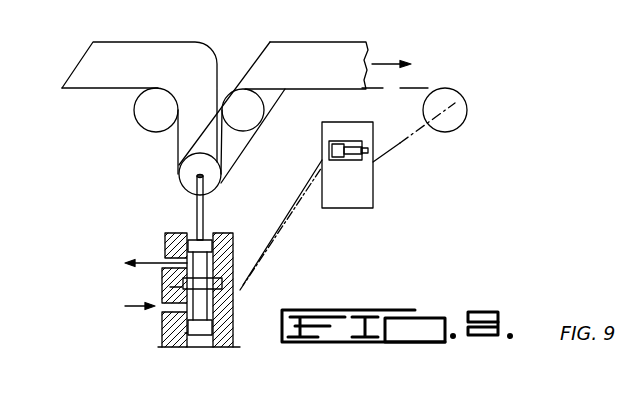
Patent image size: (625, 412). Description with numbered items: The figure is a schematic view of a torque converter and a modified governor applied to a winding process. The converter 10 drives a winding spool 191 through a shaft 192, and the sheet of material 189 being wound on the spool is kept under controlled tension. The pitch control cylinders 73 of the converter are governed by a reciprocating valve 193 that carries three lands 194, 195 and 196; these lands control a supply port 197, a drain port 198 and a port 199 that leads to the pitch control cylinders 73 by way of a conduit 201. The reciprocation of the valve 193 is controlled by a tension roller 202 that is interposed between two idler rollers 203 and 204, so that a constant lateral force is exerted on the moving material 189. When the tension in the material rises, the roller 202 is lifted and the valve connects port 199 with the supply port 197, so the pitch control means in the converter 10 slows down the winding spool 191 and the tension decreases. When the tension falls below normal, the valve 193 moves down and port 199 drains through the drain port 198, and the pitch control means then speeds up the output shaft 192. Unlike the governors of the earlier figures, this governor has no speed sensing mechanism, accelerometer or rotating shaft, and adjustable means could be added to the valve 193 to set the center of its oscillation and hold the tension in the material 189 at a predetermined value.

The torque converter 10 is at (374, 192).
The pitch control cylinders 73 is at (350, 140).
The sheet of material 189 is at (148, 48).
The spool 191 is at (458, 106).
The shaft 192 is at (400, 143).
The reciprocating valve 193 is at (201, 212).
The land 194 is at (205, 230).
The land 195 is at (172, 287).
The land 196 is at (185, 333).
The supply port 197 is at (173, 307).
The drain port 198 is at (170, 257).
The port 199 is at (222, 284).
The conduit 201 is at (270, 243).
The tension roller 202 is at (186, 177).
The idler roller 203 is at (145, 127).
The idler roller 204 is at (248, 125).